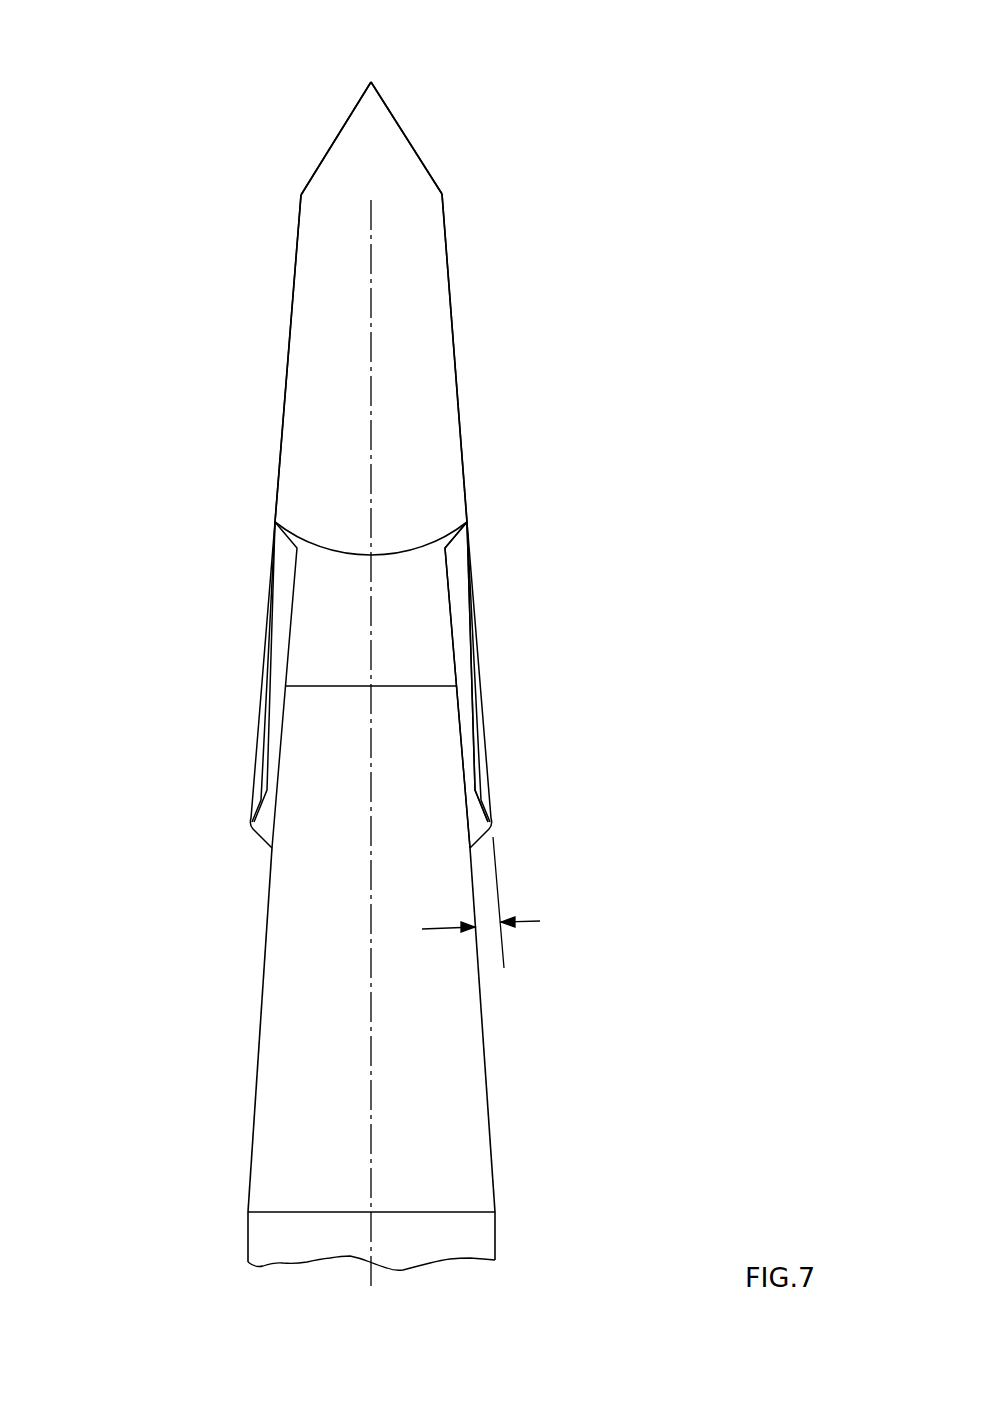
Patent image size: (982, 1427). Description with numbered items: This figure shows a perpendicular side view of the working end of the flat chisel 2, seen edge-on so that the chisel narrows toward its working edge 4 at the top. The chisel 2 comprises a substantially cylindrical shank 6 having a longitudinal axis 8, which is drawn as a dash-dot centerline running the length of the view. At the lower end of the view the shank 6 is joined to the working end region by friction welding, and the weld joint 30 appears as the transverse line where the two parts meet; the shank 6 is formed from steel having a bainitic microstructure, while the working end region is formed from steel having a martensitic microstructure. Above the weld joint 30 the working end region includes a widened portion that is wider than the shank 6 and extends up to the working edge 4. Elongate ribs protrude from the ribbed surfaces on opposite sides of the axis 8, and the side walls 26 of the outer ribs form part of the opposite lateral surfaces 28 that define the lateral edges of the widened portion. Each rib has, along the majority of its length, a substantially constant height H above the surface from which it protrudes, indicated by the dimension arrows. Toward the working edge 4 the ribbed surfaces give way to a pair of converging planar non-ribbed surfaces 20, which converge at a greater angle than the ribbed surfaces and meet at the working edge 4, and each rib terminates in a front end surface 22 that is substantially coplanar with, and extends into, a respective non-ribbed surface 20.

The flat chisel 2 is at (538, 208).
The working edge 4 is at (371, 82).
The shank 6 is at (468, 1236).
The longitudinal axis 8 is at (372, 1230).
The non-ribbed surface 20 is at (398, 123).
The front end surface 22 is at (310, 178).
The side wall 26 is at (458, 645).
The lateral surface 28 is at (425, 397).
The weld joint 30 is at (298, 1212).
The rib height H is at (491, 902).